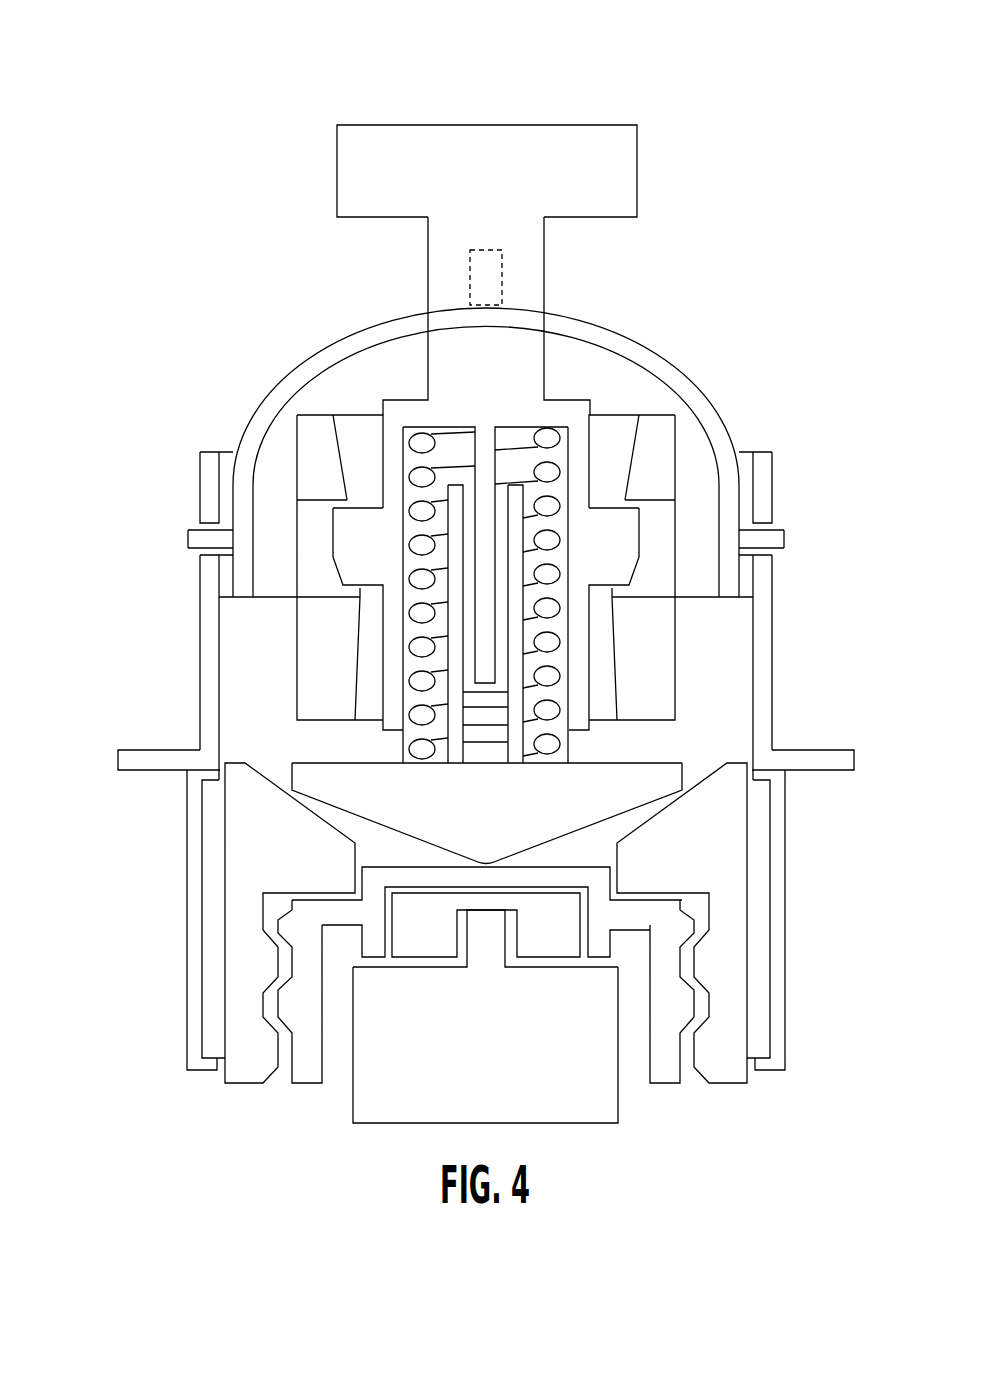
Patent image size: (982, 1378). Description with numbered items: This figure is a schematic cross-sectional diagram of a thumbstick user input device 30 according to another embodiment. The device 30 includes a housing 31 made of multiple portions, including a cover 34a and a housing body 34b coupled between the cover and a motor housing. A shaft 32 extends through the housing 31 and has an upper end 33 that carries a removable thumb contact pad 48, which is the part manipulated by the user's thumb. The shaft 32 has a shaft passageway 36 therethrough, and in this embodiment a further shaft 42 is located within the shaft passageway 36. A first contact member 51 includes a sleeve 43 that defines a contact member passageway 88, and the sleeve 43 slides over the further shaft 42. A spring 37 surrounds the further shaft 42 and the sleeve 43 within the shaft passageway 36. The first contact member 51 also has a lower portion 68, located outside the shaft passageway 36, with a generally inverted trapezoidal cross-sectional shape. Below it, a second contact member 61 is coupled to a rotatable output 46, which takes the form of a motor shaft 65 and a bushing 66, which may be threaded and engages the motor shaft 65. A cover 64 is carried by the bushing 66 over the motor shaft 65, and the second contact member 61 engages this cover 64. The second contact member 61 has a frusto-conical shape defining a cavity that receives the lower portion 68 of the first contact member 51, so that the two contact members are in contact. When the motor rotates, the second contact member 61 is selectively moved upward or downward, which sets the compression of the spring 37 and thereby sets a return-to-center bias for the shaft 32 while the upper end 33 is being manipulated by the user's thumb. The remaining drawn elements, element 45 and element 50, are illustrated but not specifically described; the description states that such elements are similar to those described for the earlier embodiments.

The thumbstick user input device 30 is at (218, 125).
The housing 31 is at (221, 425).
The shaft 32 is at (564, 396).
The upper end 33 is at (502, 280).
The cover 34a is at (290, 373).
The housing body 34b is at (212, 605).
The shaft passageway 36 is at (556, 443).
The spring 37 is at (556, 500).
The further shaft 42 is at (483, 480).
The sleeve 43 is at (413, 753).
The base body 45 is at (620, 1115).
The rotatable output 46 is at (438, 972).
The thumb contact pad 48 is at (567, 165).
The guide block 50 is at (692, 716).
The first contact member 51 is at (282, 752).
The second contact member 61 is at (242, 1100).
The cover 64 is at (290, 999).
The motor shaft 65 is at (480, 948).
The bushing 66 is at (545, 913).
The lower portion 68 is at (598, 788).
The contact member passageway 88 is at (487, 732).